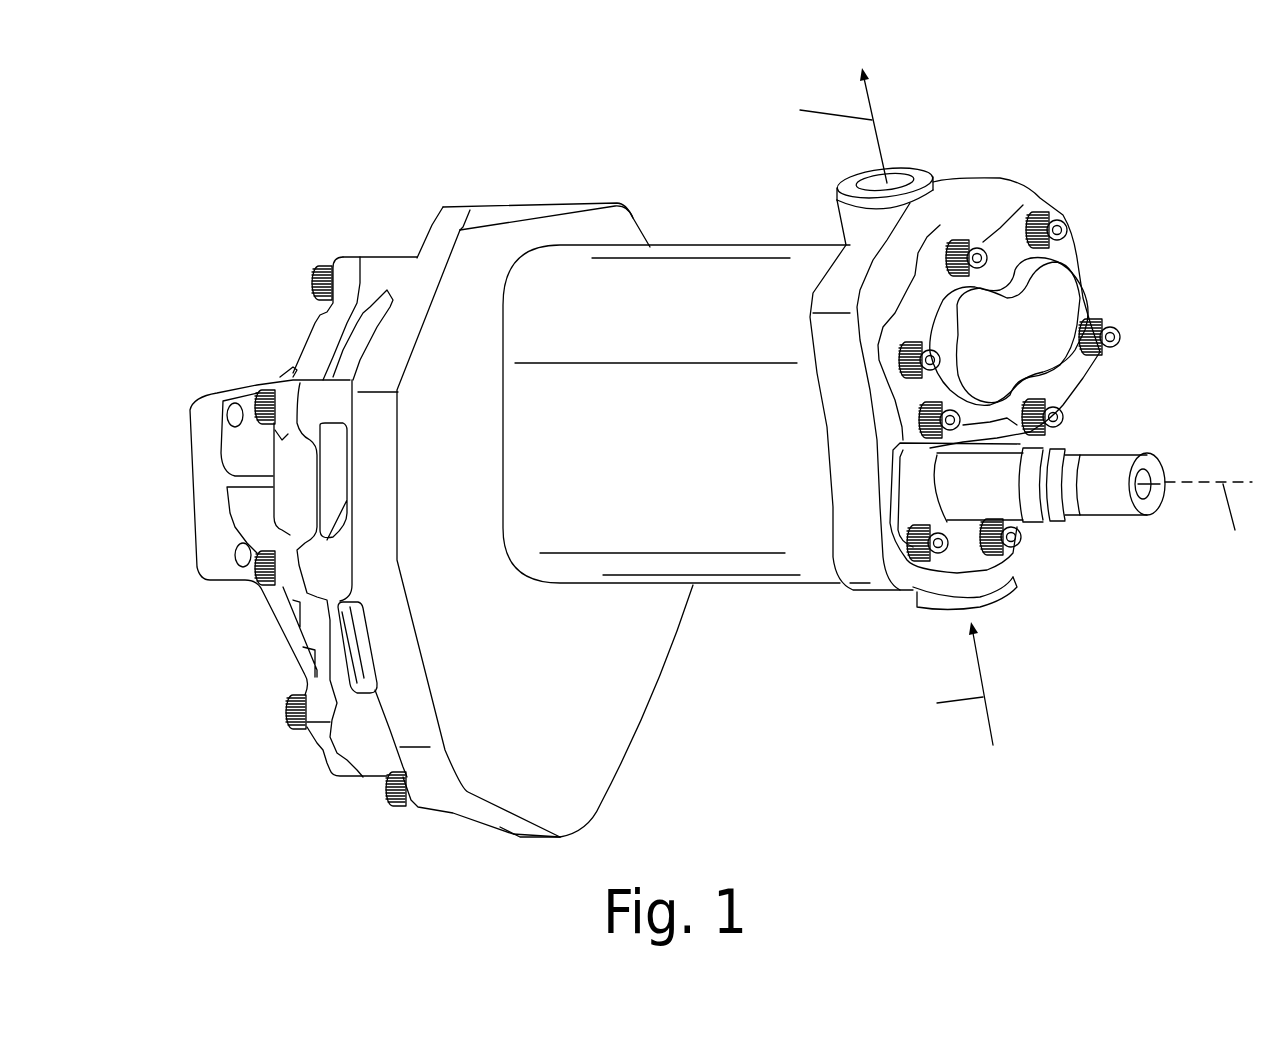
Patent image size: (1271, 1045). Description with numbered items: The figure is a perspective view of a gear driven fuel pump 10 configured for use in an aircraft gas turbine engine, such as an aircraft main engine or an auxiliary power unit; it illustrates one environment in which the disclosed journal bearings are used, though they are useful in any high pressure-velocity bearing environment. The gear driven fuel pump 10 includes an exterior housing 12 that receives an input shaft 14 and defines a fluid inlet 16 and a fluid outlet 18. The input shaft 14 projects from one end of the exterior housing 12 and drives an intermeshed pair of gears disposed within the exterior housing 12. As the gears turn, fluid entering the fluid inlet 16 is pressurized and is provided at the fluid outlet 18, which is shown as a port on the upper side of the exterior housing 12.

The gear driven fuel pump 10 is at (493, 126).
The exterior housing 12 is at (725, 567).
The input shaft 14 is at (1110, 465).
The fluid inlet 16 is at (990, 588).
The fluid outlet 18 is at (920, 170).